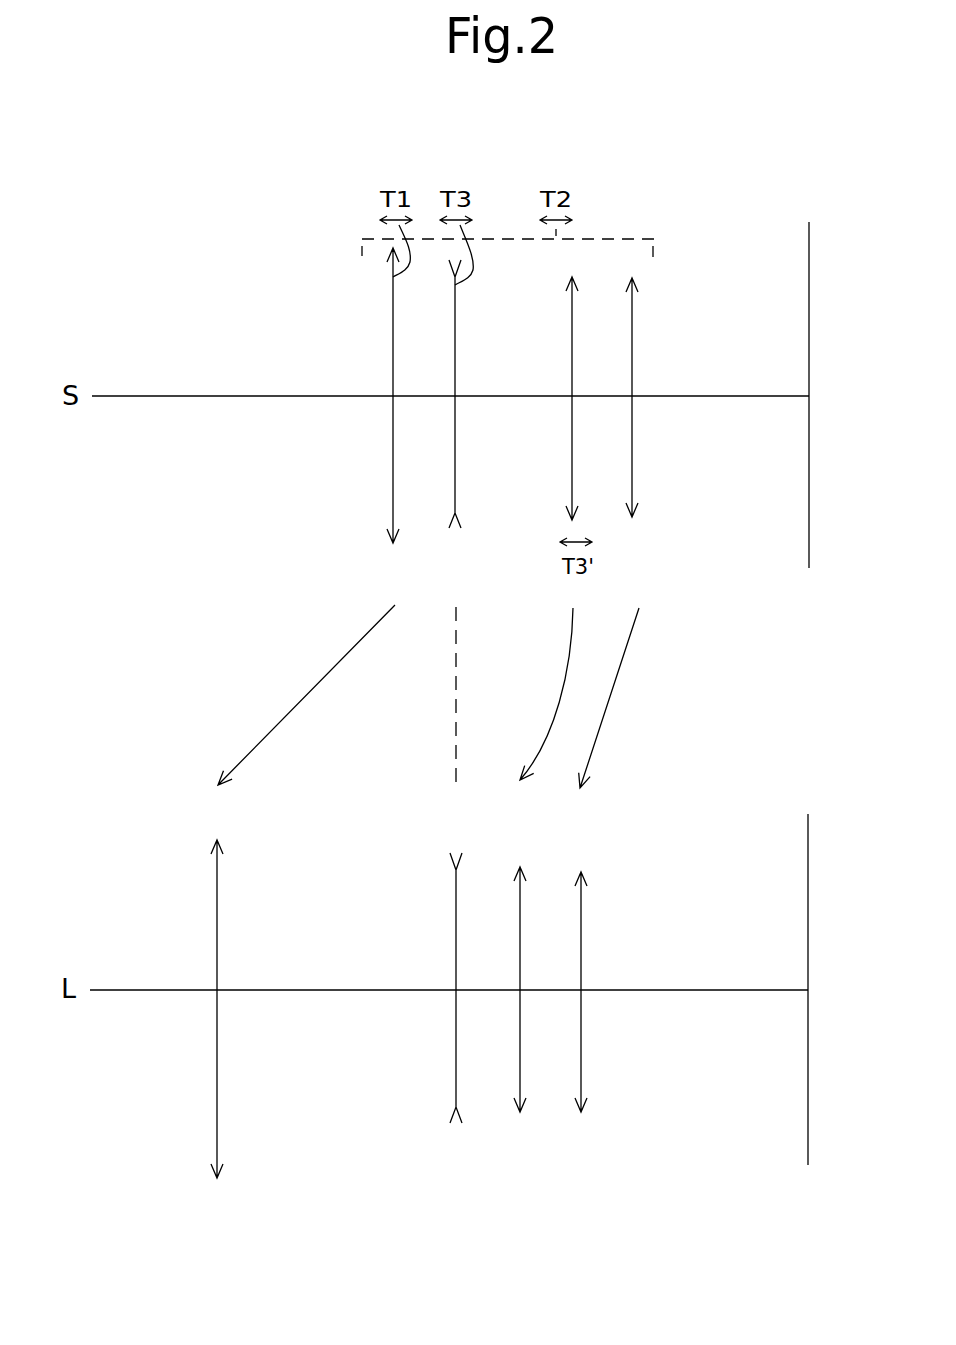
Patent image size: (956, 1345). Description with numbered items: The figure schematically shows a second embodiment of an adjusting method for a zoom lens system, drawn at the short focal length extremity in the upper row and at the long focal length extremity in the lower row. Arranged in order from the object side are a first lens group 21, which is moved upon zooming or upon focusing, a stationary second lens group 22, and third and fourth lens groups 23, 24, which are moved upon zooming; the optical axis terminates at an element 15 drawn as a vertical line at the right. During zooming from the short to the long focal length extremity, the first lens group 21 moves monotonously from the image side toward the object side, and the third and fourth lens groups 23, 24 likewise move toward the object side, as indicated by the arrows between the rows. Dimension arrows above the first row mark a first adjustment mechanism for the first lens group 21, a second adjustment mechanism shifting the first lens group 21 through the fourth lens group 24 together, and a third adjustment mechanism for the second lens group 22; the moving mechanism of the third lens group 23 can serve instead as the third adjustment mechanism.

The image plane 15 is at (810, 471).
The first lens group 21 is at (392, 434).
The second lens group 22 is at (456, 433).
The third lens group 23 is at (572, 471).
The fourth lens group 24 is at (633, 473).